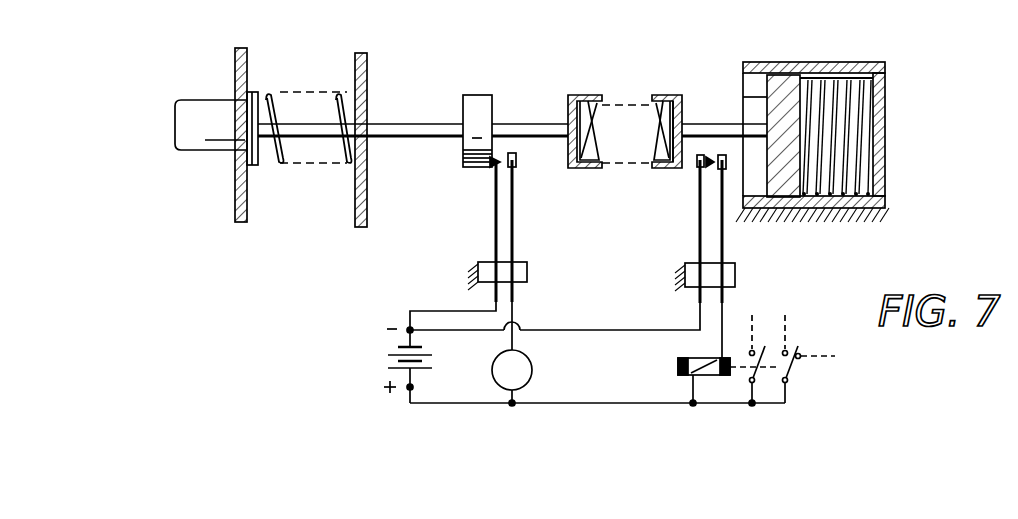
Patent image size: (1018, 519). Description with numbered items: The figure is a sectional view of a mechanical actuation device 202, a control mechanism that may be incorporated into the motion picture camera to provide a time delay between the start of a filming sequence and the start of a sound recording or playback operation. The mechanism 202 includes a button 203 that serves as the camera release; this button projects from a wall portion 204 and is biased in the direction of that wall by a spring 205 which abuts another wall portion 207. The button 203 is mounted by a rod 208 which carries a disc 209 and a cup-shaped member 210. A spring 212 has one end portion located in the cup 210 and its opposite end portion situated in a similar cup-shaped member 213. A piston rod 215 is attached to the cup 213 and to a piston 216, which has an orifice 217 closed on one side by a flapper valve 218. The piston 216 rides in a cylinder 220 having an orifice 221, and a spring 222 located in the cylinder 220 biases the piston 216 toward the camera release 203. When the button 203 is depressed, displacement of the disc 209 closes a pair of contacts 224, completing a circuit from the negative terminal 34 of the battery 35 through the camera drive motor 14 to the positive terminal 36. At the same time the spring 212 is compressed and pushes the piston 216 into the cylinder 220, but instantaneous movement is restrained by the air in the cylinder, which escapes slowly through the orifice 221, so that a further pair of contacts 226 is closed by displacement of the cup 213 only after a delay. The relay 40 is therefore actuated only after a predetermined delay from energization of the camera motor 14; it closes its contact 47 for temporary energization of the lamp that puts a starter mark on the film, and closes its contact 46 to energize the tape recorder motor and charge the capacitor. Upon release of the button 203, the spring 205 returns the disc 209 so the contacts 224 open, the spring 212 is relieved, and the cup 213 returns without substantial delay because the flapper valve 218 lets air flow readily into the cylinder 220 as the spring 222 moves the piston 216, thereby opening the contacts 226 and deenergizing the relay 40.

The mechanical actuation device 202 is at (548, 37).
The button 203 is at (214, 100).
The wall portion 204 is at (250, 56).
The spring 205 is at (285, 160).
The wall portion 207 is at (368, 57).
The rod 208 is at (446, 126).
The disc 209 is at (489, 72).
The cup-shaped member 210 is at (579, 95).
The spring 212 is at (604, 103).
The cup-shaped member 213 is at (700, 76).
The piston rod 215 is at (734, 125).
The piston 216 is at (782, 190).
The orifice 217 is at (765, 98).
The flapper valve 218 is at (815, 108).
The cylinder 220 is at (766, 62).
The orifice 221 is at (888, 96).
The spring 222 is at (826, 203).
The pair of contacts 224 is at (490, 222).
The further pair of contacts 226 is at (698, 220).
The negative terminal 34 is at (410, 328).
The battery 35 is at (390, 365).
The positive terminal 36 is at (408, 390).
The camera drive motor 14 is at (532, 373).
The relay 40 is at (680, 360).
The contact 47 is at (751, 382).
The contact 46 is at (788, 379).